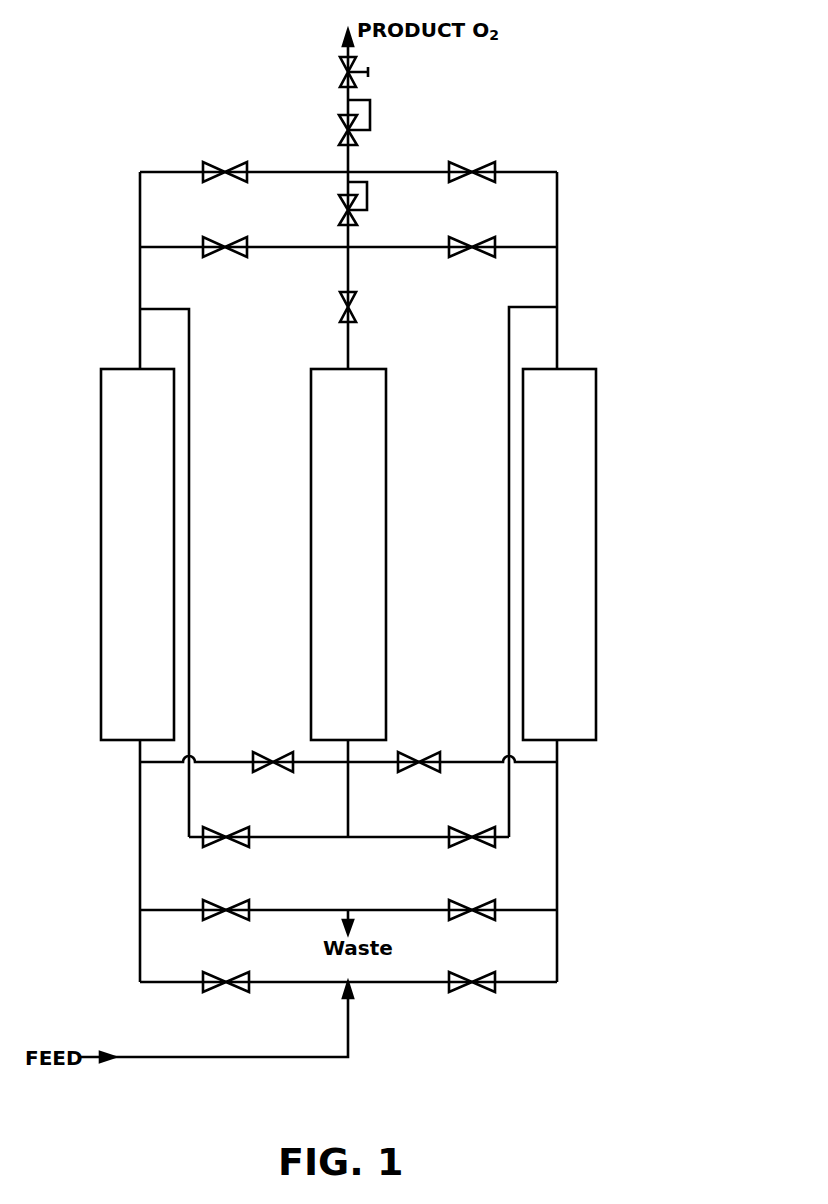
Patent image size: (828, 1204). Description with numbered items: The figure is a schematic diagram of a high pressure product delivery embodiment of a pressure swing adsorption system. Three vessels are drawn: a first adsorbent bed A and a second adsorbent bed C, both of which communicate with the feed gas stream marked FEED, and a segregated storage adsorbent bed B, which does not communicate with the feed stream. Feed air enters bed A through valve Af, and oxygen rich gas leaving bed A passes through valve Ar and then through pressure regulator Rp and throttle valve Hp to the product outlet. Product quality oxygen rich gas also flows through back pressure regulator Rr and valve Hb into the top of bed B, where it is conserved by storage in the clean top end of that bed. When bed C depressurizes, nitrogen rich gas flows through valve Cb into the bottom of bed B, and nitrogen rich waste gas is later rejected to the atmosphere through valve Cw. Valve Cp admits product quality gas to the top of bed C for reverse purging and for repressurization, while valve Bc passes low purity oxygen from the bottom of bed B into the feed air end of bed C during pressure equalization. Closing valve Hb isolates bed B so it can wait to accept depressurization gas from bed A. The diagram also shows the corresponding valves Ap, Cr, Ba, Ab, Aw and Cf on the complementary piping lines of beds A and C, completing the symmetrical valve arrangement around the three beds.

The first adsorbent bed A is at (137, 554).
The segregated storage adsorbent bed B is at (348, 554).
The second adsorbent bed C is at (559, 554).
The valve Ar is at (225, 159).
The column A product valve Ap is at (225, 234).
The column C repressurization valve Cr is at (472, 159).
The valve Cp is at (472, 234).
The column B to A equalization valve Ba is at (273, 749).
The valve Bc is at (419, 749).
The column A to B bottom valve Ab is at (226, 824).
The valve Cb is at (472, 824).
The column A waste valve Aw is at (226, 897).
The valve Cw is at (472, 897).
The valve Af is at (226, 969).
The column C feed valve Cf is at (472, 969).
The throttle valve Hp is at (374, 72).
The pressure regulator Rp is at (373, 122).
The back pressure regulator Rr is at (369, 203).
The valve Hb is at (370, 307).